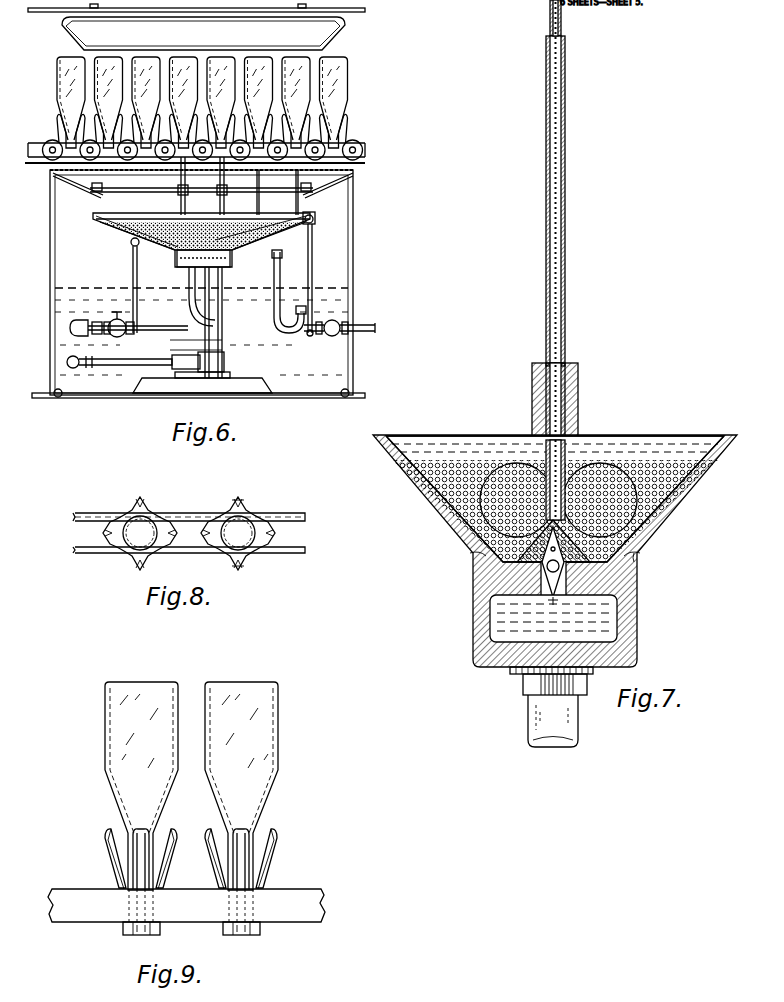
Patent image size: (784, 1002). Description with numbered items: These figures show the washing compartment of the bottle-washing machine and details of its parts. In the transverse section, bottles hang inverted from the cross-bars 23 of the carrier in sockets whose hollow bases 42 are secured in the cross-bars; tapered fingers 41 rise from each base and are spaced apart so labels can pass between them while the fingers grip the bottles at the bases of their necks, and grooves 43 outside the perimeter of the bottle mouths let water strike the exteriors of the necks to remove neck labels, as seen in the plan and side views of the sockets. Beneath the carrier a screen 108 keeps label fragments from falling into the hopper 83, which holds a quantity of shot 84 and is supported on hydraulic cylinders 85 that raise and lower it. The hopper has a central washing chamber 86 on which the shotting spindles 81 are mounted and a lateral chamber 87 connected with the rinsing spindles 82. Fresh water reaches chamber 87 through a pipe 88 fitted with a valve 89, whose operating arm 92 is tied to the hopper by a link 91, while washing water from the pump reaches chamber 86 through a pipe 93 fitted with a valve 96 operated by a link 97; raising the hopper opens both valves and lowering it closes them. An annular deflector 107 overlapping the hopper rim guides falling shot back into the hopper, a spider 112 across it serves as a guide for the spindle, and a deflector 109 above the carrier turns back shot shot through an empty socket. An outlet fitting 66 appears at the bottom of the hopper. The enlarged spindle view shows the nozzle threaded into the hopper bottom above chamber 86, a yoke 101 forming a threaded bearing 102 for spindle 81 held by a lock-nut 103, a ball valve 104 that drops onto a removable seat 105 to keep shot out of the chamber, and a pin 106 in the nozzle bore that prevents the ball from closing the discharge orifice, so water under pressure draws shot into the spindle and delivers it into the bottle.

In FIG. 8, the cross-bar 23 is at (296, 508).
In FIG. 9, the cross-bar 23 is at (300, 890).
In FIG. 8, the tapered finger 41 is at (270, 542).
In FIG. 9, the tapered finger 41 is at (276, 864).
In FIG. 9, the base 42 is at (262, 930).
In FIG. 8, the groove 43 is at (235, 507).
In FIG. 6, the hopper outlet fitting 66 is at (178, 264).
In FIG. 6, the shotting spindle 81 is at (186, 180).
In FIG. 7, the shotting spindle 81 is at (565, 236).
In FIG. 6, the rinsing spindle 82 is at (258, 178).
In FIG. 6, the hopper 83 is at (188, 231).
In FIG. 7, the hopper 83 is at (422, 504).
In FIG. 6, the shot 84 is at (172, 243).
In FIG. 7, the shot 84 is at (655, 458).
In FIG. 6, the hydraulic cylinder 85 is at (222, 333).
In FIG. 6, the washing chamber 86 is at (70, 333).
In FIG. 7, the washing chamber 86 is at (617, 628).
In FIG. 6, the lateral chamber 87 is at (312, 215).
In FIG. 6, the pipe 88 is at (286, 290).
In FIG. 7, the pipe 88 is at (636, 558).
In FIG. 6, the valve 89 is at (348, 325).
In FIG. 6, the link 91 is at (313, 250).
In FIG. 6, the operating arm 92 is at (334, 313).
In FIG. 6, the pipe 93 is at (178, 330).
In FIG. 7, the pipe 93 is at (578, 722).
In FIG. 6, the valve 96 is at (122, 318).
In FIG. 6, the link 97 is at (131, 250).
In FIG. 7, the yoke 101 is at (600, 448).
In FIG. 7, the threaded bearing 102 is at (578, 416).
In FIG. 7, the lock-nut 103 is at (578, 368).
In FIG. 7, the ball valve 104 is at (540, 578).
In FIG. 7, the removable seat 105 is at (540, 600).
In FIG. 7, the pin 106 is at (512, 560).
In FIG. 6, the annular deflector 107 is at (353, 178).
In FIG. 6, the screen 108 is at (340, 172).
In FIG. 6, the deflector 109 is at (252, 18).
In FIG. 6, the spider 112 is at (135, 192).